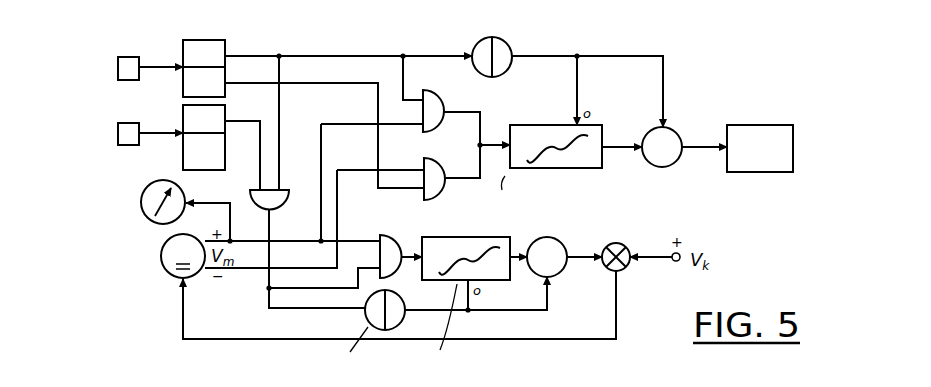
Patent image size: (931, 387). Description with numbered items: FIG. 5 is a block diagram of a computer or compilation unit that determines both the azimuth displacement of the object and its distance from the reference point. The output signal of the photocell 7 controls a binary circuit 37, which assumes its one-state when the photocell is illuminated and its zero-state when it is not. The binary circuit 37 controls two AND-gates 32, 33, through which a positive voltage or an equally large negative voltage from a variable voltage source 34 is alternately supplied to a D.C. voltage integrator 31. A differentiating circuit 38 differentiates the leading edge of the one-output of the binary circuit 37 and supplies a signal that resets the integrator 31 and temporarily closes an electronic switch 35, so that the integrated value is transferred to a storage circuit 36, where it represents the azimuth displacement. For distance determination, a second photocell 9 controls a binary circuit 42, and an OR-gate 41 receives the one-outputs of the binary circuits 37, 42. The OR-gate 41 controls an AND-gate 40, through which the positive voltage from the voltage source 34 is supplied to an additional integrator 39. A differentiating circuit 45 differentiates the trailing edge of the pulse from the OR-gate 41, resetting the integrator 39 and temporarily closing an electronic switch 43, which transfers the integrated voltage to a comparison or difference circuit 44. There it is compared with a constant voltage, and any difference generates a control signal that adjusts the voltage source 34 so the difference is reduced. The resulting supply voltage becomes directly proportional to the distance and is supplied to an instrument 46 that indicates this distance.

The photocell 7 is at (131, 57).
The photocell 9 is at (126, 123).
The binary circuit 37 is at (223, 49).
The binary circuit 42 is at (222, 116).
The differentiating circuit 38 is at (502, 46).
The AND-gate 32 is at (438, 106).
The AND-gate 33 is at (433, 173).
The D.C. voltage integrator 31 is at (587, 134).
The electronic switch 35 is at (664, 139).
The storage circuit 36 is at (767, 134).
The OR-gate 41 is at (269, 197).
The instrument 46 is at (178, 195).
The variable voltage source 34 is at (165, 258).
The AND-gate 40 is at (388, 247).
The integrator 39 is at (443, 243).
The electronic switch 43 is at (551, 247).
The comparison or difference circuit 44 is at (618, 243).
The differentiating circuit 45 is at (393, 323).